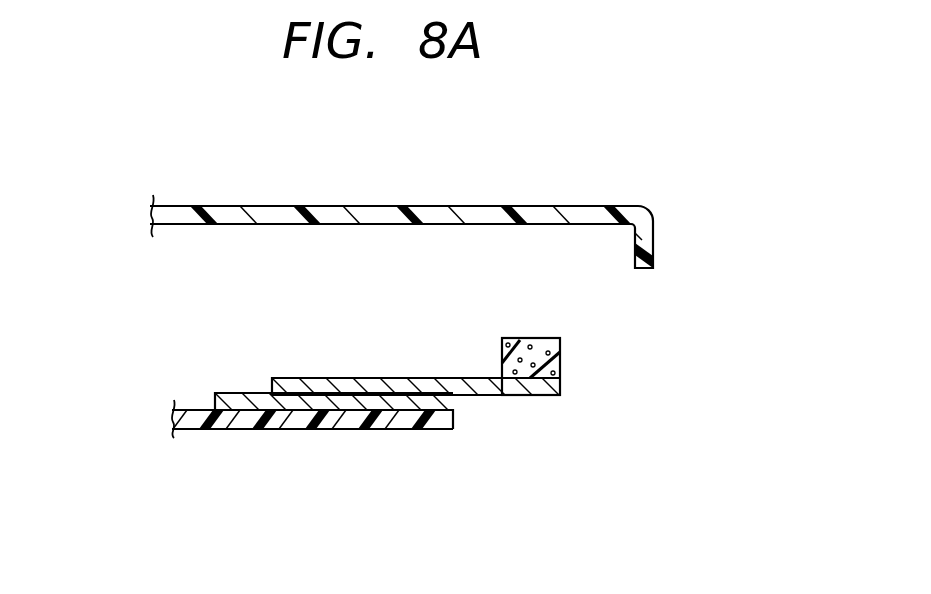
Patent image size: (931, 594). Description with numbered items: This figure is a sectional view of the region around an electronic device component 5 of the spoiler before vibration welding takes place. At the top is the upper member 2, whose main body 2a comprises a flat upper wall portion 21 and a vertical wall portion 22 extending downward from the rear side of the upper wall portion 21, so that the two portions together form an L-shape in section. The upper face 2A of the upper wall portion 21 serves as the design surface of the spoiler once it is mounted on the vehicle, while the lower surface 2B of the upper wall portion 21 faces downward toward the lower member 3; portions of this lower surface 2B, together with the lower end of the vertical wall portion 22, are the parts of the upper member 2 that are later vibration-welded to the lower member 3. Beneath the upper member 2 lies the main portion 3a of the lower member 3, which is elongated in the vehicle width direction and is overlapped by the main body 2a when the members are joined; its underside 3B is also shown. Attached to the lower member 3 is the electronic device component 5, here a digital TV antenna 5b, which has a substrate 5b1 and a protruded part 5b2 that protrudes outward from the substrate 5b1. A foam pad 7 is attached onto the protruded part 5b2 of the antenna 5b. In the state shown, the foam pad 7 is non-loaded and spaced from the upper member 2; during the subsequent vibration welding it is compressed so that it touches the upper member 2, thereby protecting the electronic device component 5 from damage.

The upper member 2 is at (471, 208).
The main body 2a is at (471, 208).
The upper wall portion 21 is at (522, 207).
The upper face 2A is at (275, 206).
The lower surface 2B is at (222, 224).
The vertical wall portion 22 is at (655, 250).
The lower member 3 is at (239, 435).
The main portion 3a is at (195, 408).
The lower surface of second member 3B is at (278, 429).
The electronic device components 5 is at (439, 398).
The digital TV antenna 5b is at (439, 398).
The substrate 5b1 is at (241, 391).
The protruded part 5b2 is at (505, 395).
The foam pad 7 is at (537, 338).